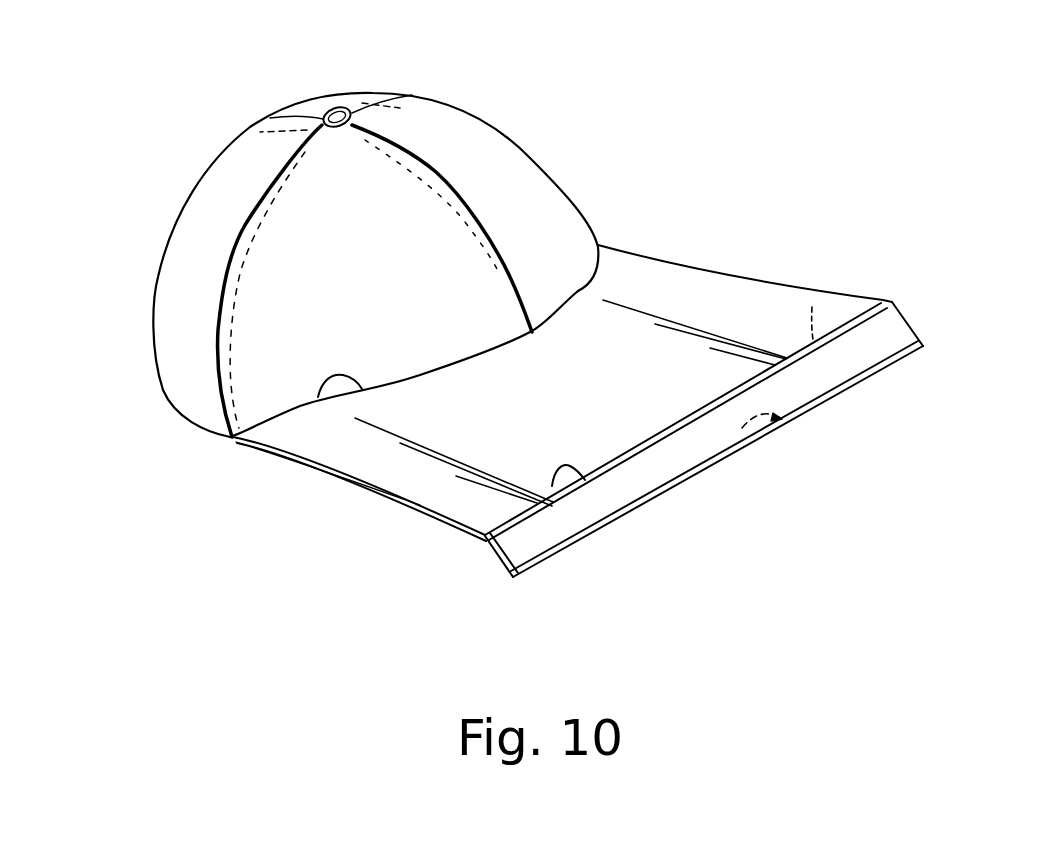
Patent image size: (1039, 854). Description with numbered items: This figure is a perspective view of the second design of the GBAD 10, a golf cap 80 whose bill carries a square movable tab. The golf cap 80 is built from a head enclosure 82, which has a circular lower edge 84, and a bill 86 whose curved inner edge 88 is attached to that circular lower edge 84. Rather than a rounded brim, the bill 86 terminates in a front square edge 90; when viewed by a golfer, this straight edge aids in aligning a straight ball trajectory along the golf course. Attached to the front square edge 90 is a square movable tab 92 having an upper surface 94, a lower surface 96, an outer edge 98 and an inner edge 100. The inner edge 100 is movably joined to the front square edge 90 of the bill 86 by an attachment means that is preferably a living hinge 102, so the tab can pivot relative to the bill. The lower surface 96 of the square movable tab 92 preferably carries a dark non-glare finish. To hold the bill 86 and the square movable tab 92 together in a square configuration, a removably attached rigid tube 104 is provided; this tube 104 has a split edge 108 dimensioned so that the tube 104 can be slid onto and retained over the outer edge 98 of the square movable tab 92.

The GBAD 10 is at (847, 98).
The golf cap 80 is at (427, 121).
The head enclosure 82 is at (422, 247).
The circular lower edge 84 is at (203, 432).
The bill 86 is at (657, 287).
The curved inner edge 88 is at (318, 397).
The front square edge 90 is at (666, 436).
The square movable tab 92 is at (885, 332).
The upper surface 94 is at (746, 389).
The lower surface 96 is at (788, 428).
The outer edge 98 is at (633, 503).
The inner edge 100 is at (585, 480).
The living hinge 102 is at (812, 307).
The rigid tube 104 is at (885, 362).
The split edge 108 is at (514, 582).